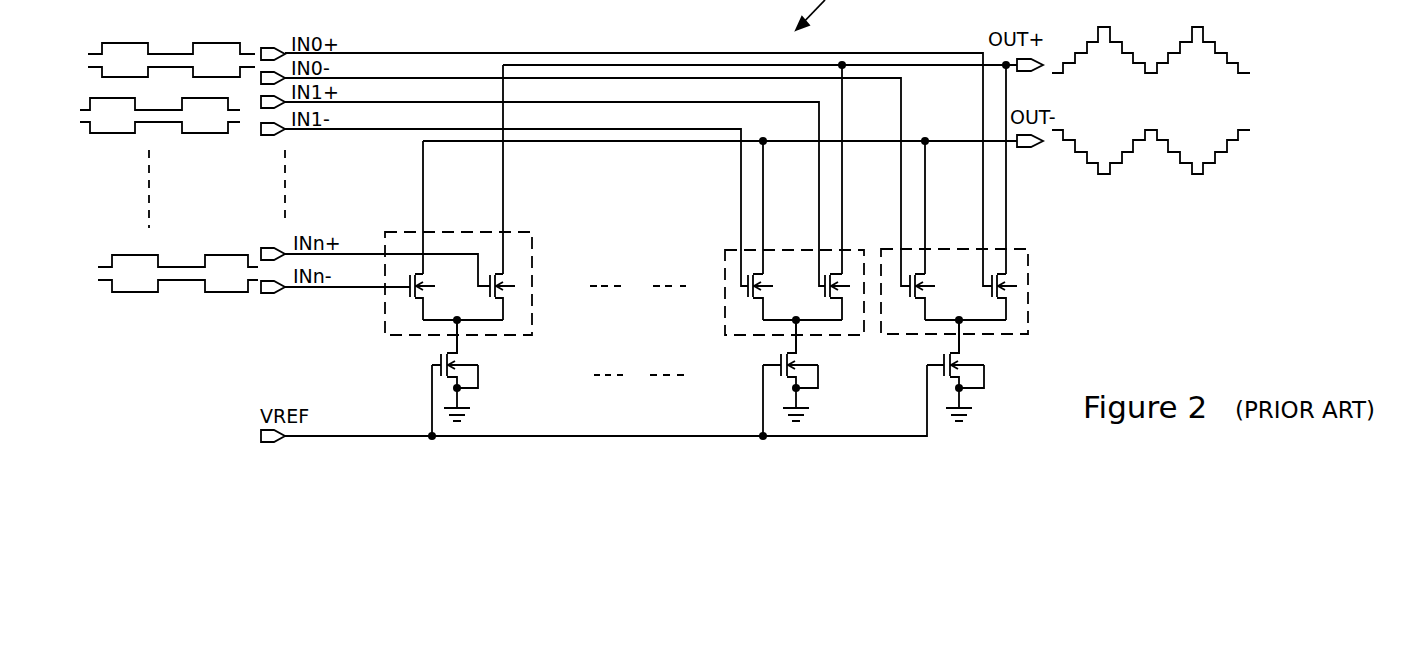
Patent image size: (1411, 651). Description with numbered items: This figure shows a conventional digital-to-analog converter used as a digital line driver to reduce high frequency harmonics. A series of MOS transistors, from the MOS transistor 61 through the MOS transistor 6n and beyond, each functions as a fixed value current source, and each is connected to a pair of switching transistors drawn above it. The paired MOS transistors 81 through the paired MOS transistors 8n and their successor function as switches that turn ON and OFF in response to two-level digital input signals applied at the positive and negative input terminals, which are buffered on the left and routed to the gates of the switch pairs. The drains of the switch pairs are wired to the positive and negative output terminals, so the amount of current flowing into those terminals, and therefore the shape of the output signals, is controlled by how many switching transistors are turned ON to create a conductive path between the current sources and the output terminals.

The paired MOS transistors 81 is at (532, 238).
The paired MOS transistors 8n is at (725, 250).
The MOS transistor 61 is at (483, 373).
The MOS transistor 6n is at (823, 375).